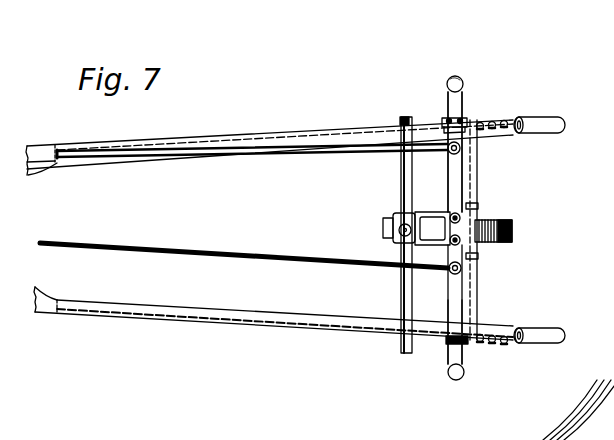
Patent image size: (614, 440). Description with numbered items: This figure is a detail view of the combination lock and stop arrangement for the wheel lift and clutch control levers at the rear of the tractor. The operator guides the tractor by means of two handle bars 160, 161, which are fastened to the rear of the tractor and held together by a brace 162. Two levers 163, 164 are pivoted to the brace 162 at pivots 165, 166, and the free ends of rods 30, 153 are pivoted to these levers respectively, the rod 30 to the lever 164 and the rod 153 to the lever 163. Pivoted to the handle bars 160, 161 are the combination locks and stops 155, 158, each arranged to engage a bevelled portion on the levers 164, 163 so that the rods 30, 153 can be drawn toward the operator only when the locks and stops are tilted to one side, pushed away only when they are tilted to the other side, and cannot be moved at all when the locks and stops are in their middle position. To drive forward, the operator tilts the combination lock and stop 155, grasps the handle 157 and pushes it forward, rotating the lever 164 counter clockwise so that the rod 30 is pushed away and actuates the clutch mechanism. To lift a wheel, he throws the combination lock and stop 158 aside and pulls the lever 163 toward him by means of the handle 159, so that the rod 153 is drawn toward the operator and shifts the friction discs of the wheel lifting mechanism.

The rod 30 is at (352, 153).
The rod 153 is at (280, 264).
The combination lock and stop 155 is at (463, 118).
The handle 157 is at (458, 78).
The combination lock and stop 158 is at (468, 344).
The handle 159 is at (463, 376).
The handle bar 160 is at (343, 132).
The handle bar 161 is at (323, 320).
The brace 162 is at (477, 177).
The lever 163 is at (452, 302).
The lever 164 is at (452, 177).
The pivot 165 is at (460, 240).
The pivot 166 is at (462, 220).